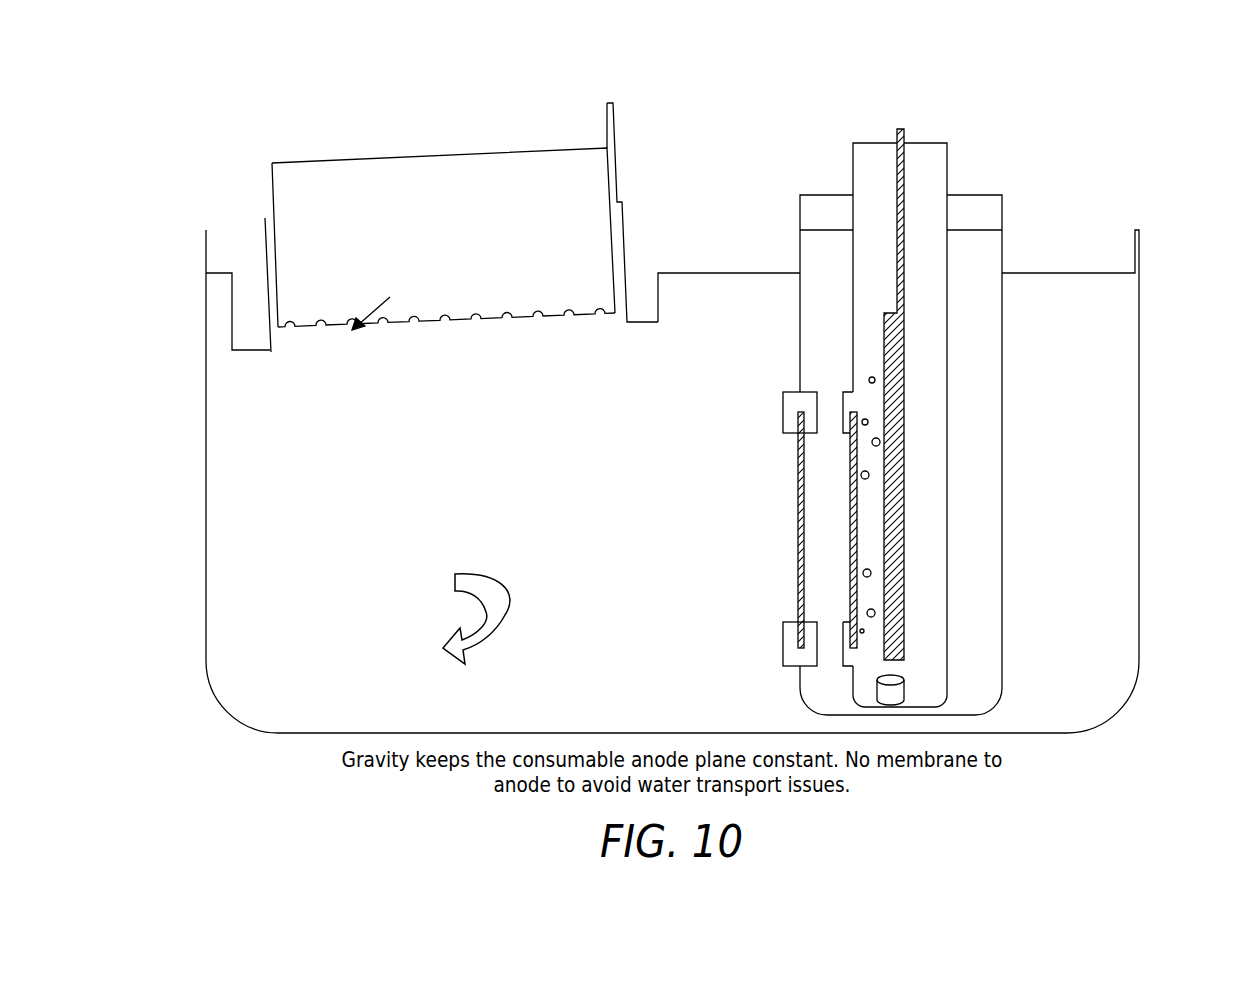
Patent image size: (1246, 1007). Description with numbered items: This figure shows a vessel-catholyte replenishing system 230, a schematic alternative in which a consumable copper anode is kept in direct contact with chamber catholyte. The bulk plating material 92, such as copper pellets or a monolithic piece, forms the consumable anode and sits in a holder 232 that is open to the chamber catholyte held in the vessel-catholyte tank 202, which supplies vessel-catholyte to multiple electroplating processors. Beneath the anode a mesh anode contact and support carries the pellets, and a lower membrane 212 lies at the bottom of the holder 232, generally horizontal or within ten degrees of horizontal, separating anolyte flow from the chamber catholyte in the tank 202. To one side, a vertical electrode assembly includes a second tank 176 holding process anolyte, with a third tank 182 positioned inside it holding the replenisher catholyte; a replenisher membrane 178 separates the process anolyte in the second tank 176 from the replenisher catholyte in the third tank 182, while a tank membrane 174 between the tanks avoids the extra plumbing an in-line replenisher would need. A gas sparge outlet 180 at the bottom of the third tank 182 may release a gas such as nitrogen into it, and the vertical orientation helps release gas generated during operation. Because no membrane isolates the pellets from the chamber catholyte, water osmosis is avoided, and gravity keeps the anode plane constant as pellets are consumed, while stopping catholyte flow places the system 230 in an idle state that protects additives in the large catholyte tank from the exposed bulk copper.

The system 230 is at (282, 72).
The holder 232 is at (265, 198).
The bulk plating material 92 is at (388, 170).
The lower membrane 212 is at (290, 328).
The vessel-catholyte tank 202 is at (206, 443).
The tank membrane 174 is at (797, 457).
The second tank 176 is at (1003, 470).
The replenisher membrane 178 is at (850, 590).
The gas sparge outlet 180 is at (900, 690).
The third tank 182 is at (950, 615).